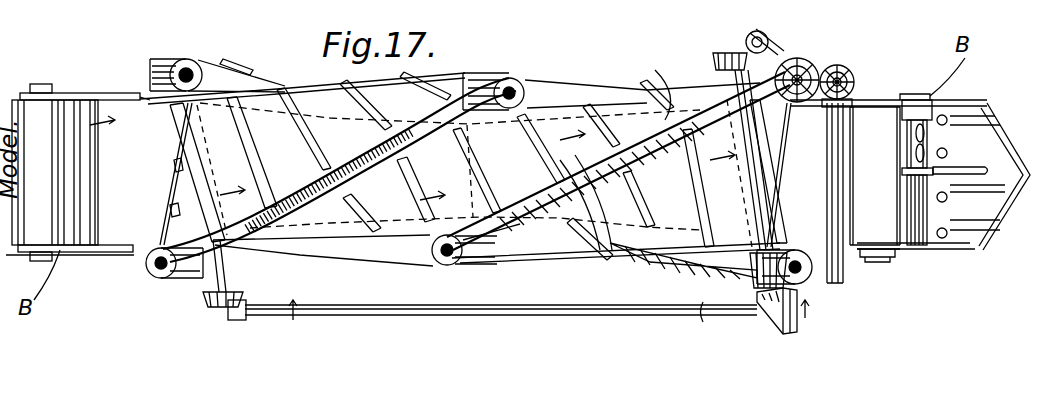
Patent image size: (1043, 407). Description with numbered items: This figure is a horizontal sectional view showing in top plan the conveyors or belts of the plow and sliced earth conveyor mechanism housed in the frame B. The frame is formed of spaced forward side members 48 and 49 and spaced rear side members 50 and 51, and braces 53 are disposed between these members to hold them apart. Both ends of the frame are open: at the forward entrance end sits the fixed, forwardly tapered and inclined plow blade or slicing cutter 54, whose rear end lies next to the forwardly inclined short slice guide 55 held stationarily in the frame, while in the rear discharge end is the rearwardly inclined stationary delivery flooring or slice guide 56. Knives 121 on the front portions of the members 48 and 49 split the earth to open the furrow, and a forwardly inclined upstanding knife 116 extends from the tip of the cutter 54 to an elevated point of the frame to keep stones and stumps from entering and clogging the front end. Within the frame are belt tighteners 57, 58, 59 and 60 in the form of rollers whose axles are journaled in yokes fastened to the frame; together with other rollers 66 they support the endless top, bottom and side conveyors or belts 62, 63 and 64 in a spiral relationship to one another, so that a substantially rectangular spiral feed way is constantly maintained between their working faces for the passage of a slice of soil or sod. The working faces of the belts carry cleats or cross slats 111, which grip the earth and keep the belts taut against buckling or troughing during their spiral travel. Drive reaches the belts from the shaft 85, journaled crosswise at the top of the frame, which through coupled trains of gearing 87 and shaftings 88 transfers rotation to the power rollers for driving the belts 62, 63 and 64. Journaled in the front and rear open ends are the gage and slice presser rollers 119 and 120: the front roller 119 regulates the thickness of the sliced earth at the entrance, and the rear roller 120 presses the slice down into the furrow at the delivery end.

The forward side member 48 is at (918, 98).
The forward side member 49 is at (892, 252).
The rear side member 50 is at (78, 255).
The rear side member 51 is at (62, 95).
The brace 53 is at (910, 208).
The plow blade or slicing cutter 54 is at (995, 240).
The slice guide 55 is at (823, 160).
The delivery flooring or slice guide 56 is at (118, 115).
The belt tightener 57 is at (512, 204).
The belt tightener 58 is at (440, 266).
The belt tightener 59 is at (515, 85).
The belt tightener 60 is at (190, 70).
The top conveyor or belt 62 is at (168, 210).
The bottom conveyor or belt 63 is at (318, 98).
The side conveyor or belt 64 is at (250, 72).
The roller 66 is at (175, 162).
The shaft 85 is at (844, 270).
The train of gearing 87 is at (215, 310).
The shafting 88 is at (545, 315).
The cleats or cross slats 111 is at (310, 158).
The knife 116 is at (945, 170).
The front gage and slice presser roller 119 is at (824, 185).
The rear gage and slice presser roller 120 is at (70, 115).
The knife 121 is at (952, 98).